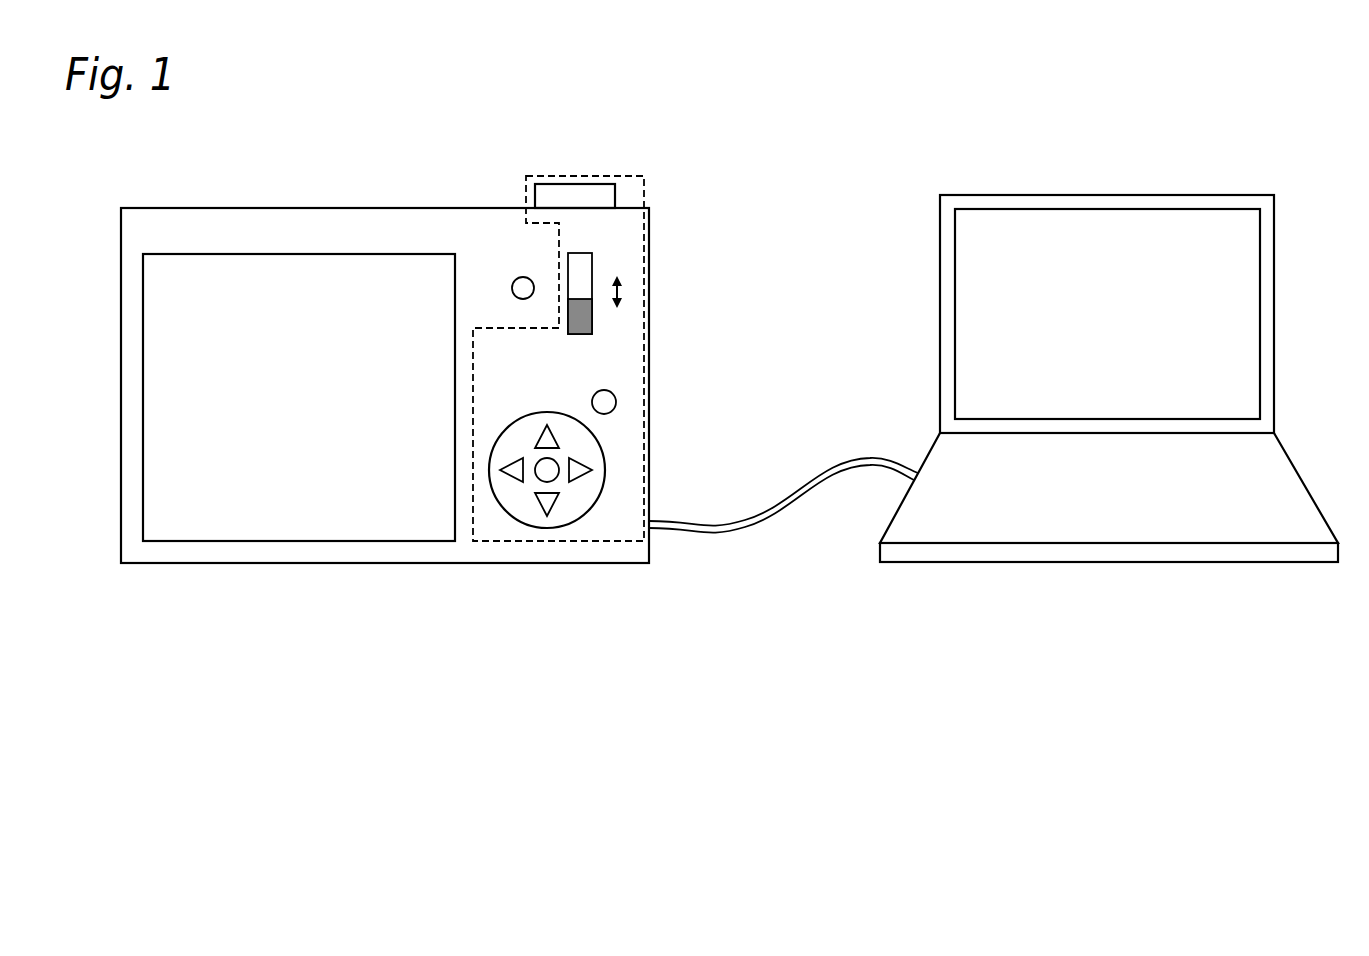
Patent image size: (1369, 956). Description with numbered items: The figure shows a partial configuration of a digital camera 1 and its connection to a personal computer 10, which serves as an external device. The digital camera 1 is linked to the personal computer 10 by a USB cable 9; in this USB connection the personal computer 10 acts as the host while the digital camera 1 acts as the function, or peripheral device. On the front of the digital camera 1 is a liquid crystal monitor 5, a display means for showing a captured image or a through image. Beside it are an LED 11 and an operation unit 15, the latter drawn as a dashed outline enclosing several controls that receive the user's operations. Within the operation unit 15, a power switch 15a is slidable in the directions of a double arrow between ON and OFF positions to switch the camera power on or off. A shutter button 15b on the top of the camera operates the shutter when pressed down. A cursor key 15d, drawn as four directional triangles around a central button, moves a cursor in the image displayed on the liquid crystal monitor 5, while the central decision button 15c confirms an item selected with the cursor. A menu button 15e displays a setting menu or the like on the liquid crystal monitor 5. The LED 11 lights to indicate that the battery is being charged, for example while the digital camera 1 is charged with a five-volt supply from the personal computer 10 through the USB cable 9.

The digital camera 1 is at (285, 193).
The liquid crystal monitor 5 is at (306, 516).
The USB cable 9 is at (747, 526).
The personal computer 10 is at (1117, 185).
The LED 11 is at (520, 287).
The operation unit 15 is at (540, 176).
The power switch 15a is at (580, 257).
The shutter button 15b is at (580, 193).
The decision button 15c is at (553, 476).
The cursor key 15d is at (541, 440).
The menu button 15e is at (611, 393).